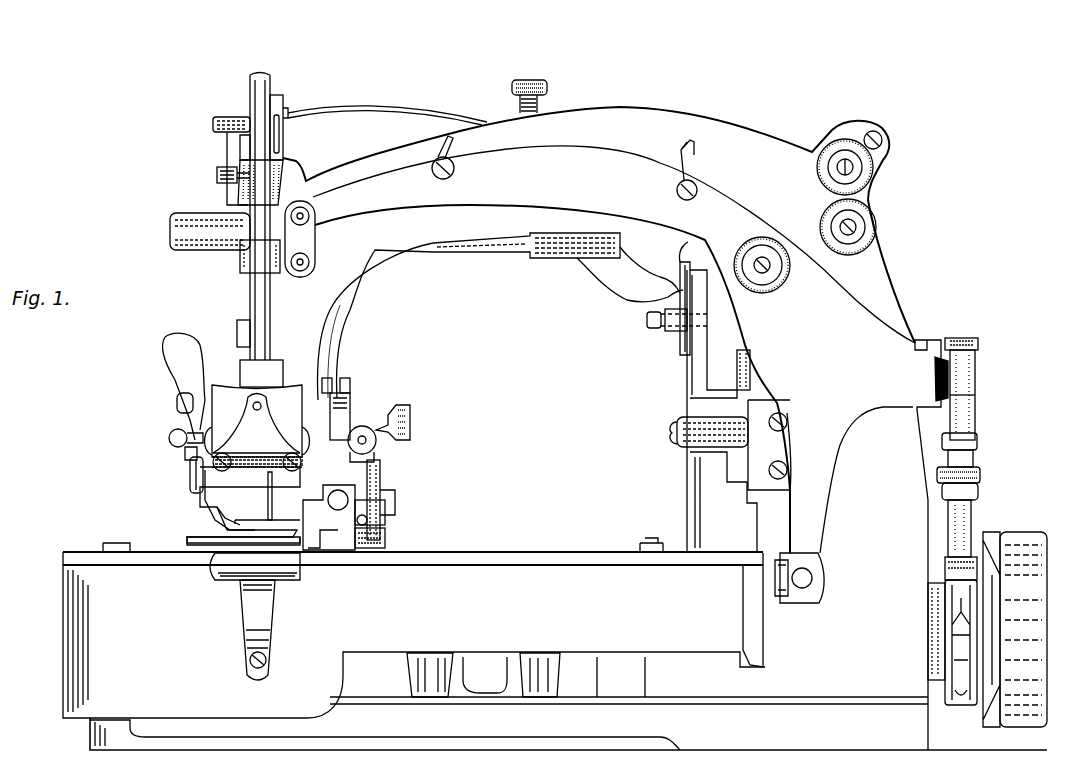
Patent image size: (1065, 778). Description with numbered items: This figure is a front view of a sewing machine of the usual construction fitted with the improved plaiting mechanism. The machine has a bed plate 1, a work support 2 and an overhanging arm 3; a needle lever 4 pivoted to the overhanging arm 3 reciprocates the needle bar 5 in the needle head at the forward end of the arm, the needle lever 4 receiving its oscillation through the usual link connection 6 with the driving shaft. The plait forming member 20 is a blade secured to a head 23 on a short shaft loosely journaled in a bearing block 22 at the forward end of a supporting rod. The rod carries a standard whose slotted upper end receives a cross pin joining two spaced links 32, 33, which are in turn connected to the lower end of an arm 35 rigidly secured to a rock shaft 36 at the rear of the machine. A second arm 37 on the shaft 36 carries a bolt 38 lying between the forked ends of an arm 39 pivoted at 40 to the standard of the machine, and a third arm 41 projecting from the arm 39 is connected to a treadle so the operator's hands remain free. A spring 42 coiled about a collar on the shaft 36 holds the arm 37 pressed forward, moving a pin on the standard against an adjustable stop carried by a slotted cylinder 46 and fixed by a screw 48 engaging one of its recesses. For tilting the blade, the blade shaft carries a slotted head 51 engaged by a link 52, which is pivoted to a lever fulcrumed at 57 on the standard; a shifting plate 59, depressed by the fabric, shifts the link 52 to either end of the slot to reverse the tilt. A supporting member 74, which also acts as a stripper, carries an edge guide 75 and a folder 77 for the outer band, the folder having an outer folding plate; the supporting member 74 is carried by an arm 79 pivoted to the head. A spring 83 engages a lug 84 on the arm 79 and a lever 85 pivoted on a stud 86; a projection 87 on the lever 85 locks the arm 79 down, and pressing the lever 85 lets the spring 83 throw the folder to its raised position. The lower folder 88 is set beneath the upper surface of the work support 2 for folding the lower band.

The bed plate 1 is at (712, 737).
The work support 2 is at (495, 630).
The overhanging arm 3 is at (853, 268).
The needle lever 4 is at (614, 244).
The needle bar 5 is at (257, 306).
The link connection 6 is at (983, 512).
The plait forming member 20 is at (248, 519).
The bearing block 22 is at (329, 517).
The head 23 is at (313, 550).
The link 32 is at (353, 393).
The link 33 is at (355, 408).
The arm 35 is at (360, 323).
The shaft 36 is at (497, 252).
The second arm 37 is at (616, 280).
The bolt 38 is at (655, 328).
The arm 39 is at (690, 378).
The pivot 40 is at (678, 432).
The third arm 41 is at (760, 355).
The spring 42 is at (684, 290).
The cylinder 46 is at (377, 447).
The screw 48 is at (408, 428).
The slotted head 51 is at (385, 533).
The link 52 is at (380, 473).
The fulcrum 57 is at (378, 505).
The shifting plate 59 is at (195, 548).
The supporting member 74 is at (227, 507).
The edge guide 75 is at (277, 482).
The folder 77 is at (230, 400).
The arm 79 is at (190, 483).
The spring 83 is at (187, 447).
The lug 84 is at (170, 435).
The lever 85 is at (173, 363).
The stud 86 is at (178, 400).
The projection 87 is at (260, 613).
The lower folder 88 is at (233, 560).